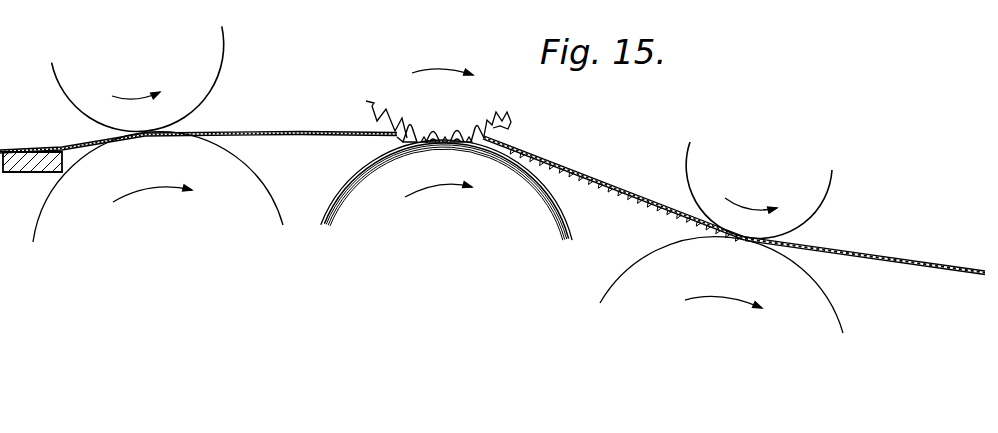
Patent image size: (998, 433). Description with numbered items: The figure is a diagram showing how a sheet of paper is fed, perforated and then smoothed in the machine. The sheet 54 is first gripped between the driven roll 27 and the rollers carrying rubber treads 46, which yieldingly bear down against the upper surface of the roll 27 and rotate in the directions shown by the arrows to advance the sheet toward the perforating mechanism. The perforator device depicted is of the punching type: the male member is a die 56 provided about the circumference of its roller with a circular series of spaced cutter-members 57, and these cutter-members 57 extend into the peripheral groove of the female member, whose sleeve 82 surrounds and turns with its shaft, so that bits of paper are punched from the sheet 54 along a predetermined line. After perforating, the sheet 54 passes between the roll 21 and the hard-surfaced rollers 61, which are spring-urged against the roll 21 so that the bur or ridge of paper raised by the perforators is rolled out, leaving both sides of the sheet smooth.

The rubber treads 46 is at (203, 63).
The roll-shaft 27 is at (158, 187).
The sheet of paper 54 is at (252, 117).
The cutter-members 57 is at (366, 101).
The die 56 is at (462, 111).
The sleeve 82 is at (446, 190).
The hard-surfaced rollers 61 is at (759, 190).
The roll 21 is at (721, 291).